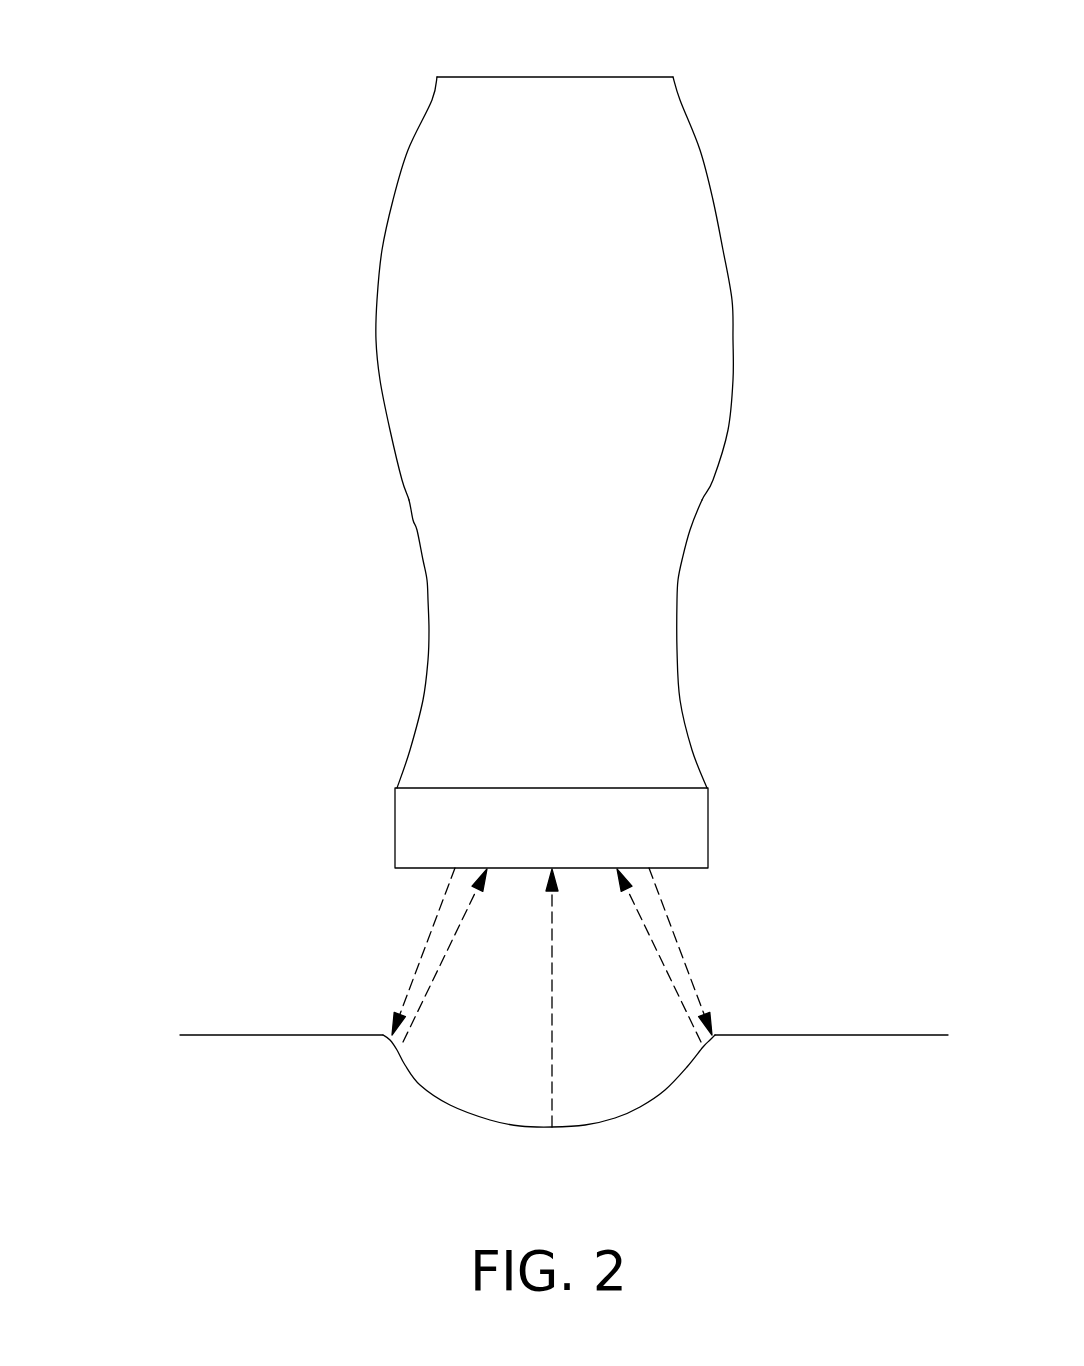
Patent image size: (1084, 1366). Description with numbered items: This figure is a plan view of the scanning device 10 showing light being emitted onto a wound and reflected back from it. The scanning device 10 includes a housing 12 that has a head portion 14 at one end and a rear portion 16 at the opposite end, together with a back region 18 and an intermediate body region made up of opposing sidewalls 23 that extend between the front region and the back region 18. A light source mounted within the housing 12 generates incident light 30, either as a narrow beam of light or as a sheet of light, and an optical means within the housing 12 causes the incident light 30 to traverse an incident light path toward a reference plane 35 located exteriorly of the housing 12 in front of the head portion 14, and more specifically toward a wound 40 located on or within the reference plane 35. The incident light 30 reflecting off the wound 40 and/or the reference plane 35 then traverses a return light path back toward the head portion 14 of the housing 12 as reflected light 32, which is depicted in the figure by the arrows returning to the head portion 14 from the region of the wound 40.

The scanning device 10 is at (262, 216).
The housing 12 is at (728, 245).
The head portion 14 is at (415, 819).
The rear portion 16 is at (515, 77).
The back region 18 is at (438, 359).
The opposing sidewalls 23 is at (427, 605).
The incident light 30 is at (442, 905).
The reflected light 32 is at (443, 955).
The reference plane 35 is at (825, 1035).
The wound 40 is at (562, 1110).